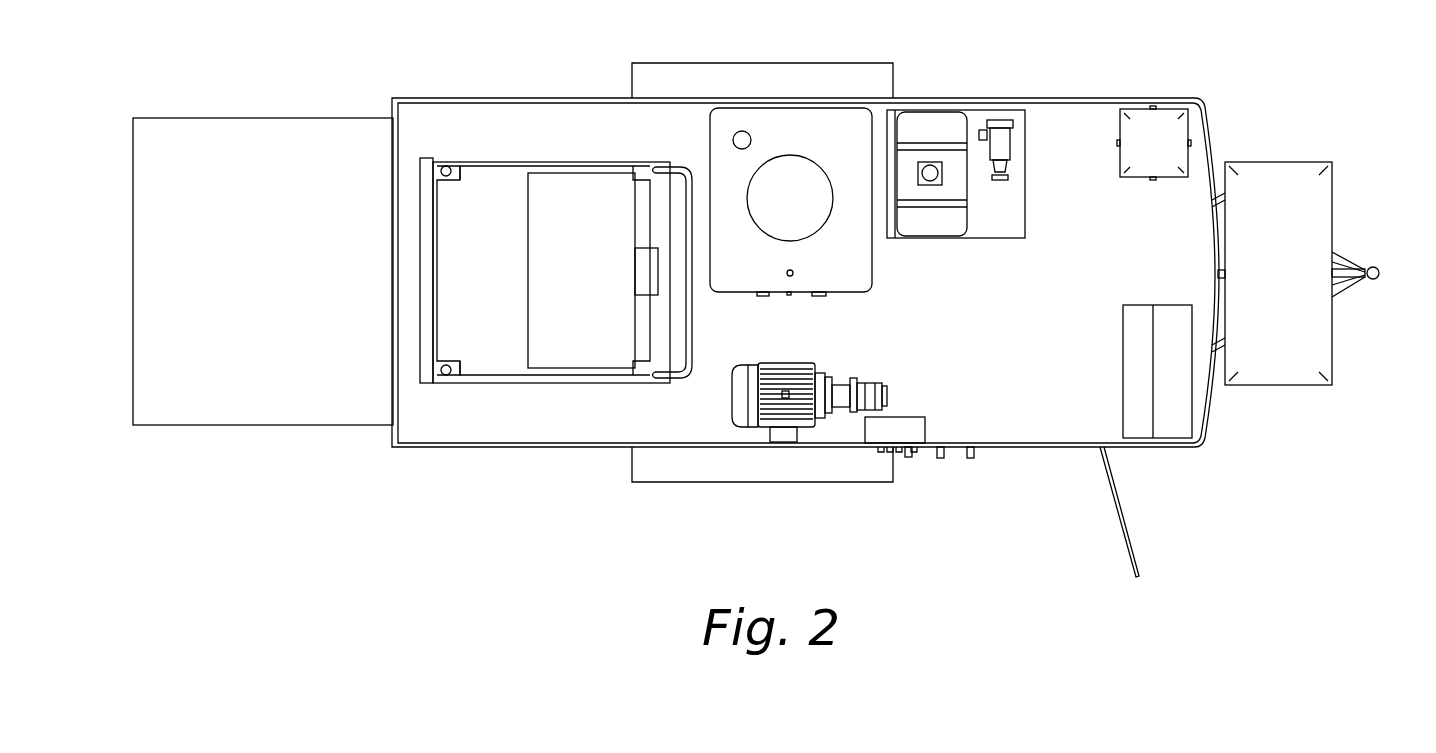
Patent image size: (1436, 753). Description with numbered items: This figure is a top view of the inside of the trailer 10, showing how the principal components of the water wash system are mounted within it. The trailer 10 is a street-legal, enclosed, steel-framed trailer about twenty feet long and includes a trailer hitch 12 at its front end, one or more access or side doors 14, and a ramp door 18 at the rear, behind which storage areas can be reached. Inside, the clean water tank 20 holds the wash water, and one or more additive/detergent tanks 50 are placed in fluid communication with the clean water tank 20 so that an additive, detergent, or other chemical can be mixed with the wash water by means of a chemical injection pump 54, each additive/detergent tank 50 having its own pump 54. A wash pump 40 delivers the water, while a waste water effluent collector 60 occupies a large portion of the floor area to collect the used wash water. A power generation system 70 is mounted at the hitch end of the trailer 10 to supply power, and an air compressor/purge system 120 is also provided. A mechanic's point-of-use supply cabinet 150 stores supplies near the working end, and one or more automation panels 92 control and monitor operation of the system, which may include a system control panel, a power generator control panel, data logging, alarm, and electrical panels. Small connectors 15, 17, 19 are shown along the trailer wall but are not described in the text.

The trailer 10 is at (1138, 34).
The trailer hitch 12 is at (1378, 264).
The access or side door 14 is at (1122, 508).
The connector 15 is at (909, 460).
The connector 17 is at (941, 461).
The ramp door 18 is at (263, 118).
The connector 19 is at (970, 461).
The clean water tank 20 is at (868, 292).
The wash pump 40 is at (800, 362).
The additive/detergent tank 50 is at (930, 238).
The chemical injection pump 54 is at (1013, 140).
The waste water effluent collector 60 is at (708, 322).
The power generation system 70 is at (1280, 160).
The automation panel 92 is at (910, 417).
The air compressor/purge system 120 is at (1137, 178).
The mechanic's point-of-use supply cabinet 150 is at (1122, 373).